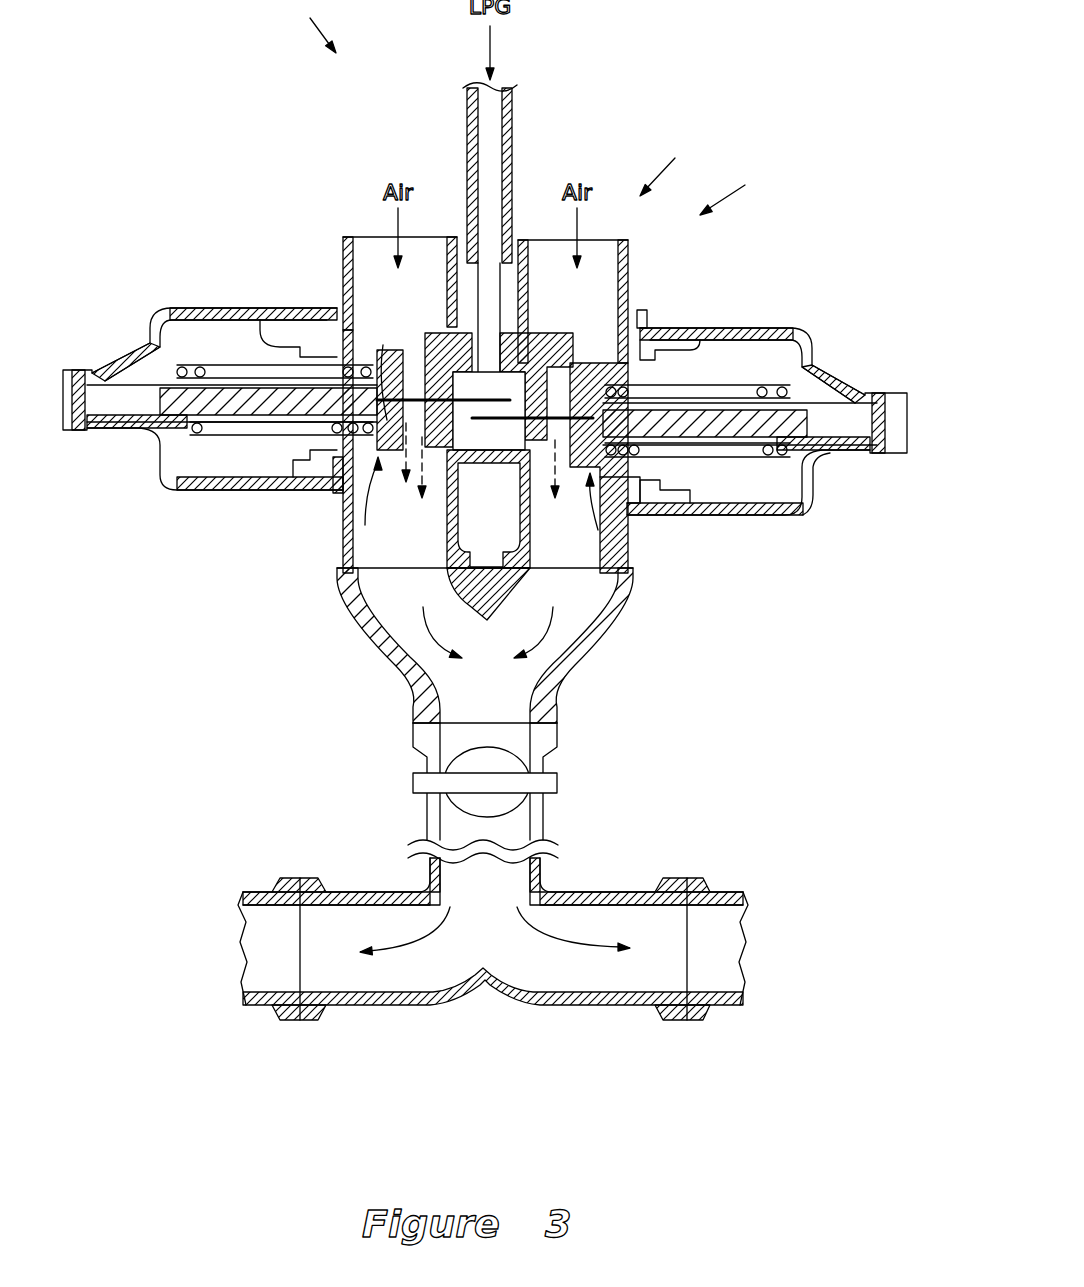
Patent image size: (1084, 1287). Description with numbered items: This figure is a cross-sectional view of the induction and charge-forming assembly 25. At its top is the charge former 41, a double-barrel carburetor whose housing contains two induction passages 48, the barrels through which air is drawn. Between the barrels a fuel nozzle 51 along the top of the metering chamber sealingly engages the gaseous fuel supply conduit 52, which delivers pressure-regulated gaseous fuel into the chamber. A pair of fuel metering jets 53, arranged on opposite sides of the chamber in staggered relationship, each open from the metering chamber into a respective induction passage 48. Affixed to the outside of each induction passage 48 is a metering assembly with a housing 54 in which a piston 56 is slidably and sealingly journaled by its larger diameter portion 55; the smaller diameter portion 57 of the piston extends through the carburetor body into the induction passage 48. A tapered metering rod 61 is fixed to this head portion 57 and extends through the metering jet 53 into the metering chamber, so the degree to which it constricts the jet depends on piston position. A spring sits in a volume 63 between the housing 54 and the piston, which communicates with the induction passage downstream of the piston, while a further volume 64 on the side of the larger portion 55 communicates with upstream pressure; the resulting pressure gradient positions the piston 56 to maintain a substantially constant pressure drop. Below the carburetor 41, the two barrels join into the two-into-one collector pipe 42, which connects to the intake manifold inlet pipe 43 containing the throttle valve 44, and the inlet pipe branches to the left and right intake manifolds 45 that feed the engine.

The induction and charge-forming assembly 25 is at (487, 98).
The charge former 41 is at (744, 184).
The two-into-one collector pipe 42 is at (605, 633).
The intake manifold inlet pipe 43 is at (557, 745).
The throttle valve 44 is at (553, 815).
The intake manifold 45 is at (245, 1010).
The induction passage 48 is at (358, 236).
The fuel nozzle 51 is at (494, 250).
The gaseous fuel supply conduit 52 is at (513, 100).
The fuel metering jet 53 is at (436, 332).
The housing 54 is at (200, 308).
The larger diameter portion 55 is at (262, 462).
The piston 56 is at (340, 578).
The smaller diameter portion 57 is at (420, 490).
The tapered metering rod 61 is at (427, 392).
The volume 63 is at (783, 477).
The further volume 64 is at (638, 492).